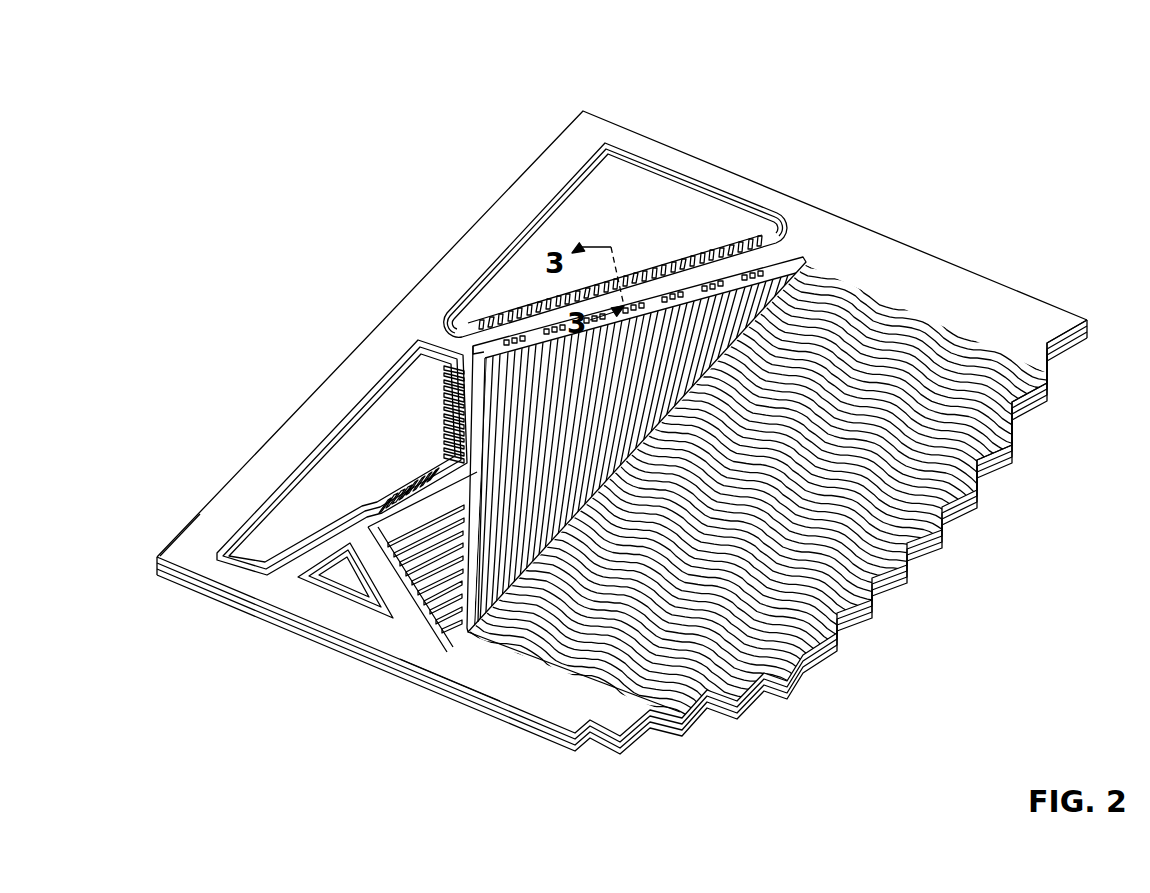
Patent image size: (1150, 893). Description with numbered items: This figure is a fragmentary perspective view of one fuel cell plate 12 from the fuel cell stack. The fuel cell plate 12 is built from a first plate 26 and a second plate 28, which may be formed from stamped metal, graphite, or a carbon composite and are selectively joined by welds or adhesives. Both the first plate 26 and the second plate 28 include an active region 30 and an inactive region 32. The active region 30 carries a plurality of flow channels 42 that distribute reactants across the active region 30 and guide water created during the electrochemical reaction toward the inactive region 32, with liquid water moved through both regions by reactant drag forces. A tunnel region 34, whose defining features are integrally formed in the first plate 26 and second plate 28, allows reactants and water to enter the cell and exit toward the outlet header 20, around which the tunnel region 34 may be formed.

The fuel cell plate 12 is at (1014, 156).
The outlet header 20 is at (624, 203).
The first plate 26 is at (186, 556).
The second plate 28 is at (466, 706).
The active region 30 is at (809, 524).
The inactive region 32 is at (613, 420).
The tunnel region 34 is at (745, 245).
The flow channels 42 is at (977, 387).